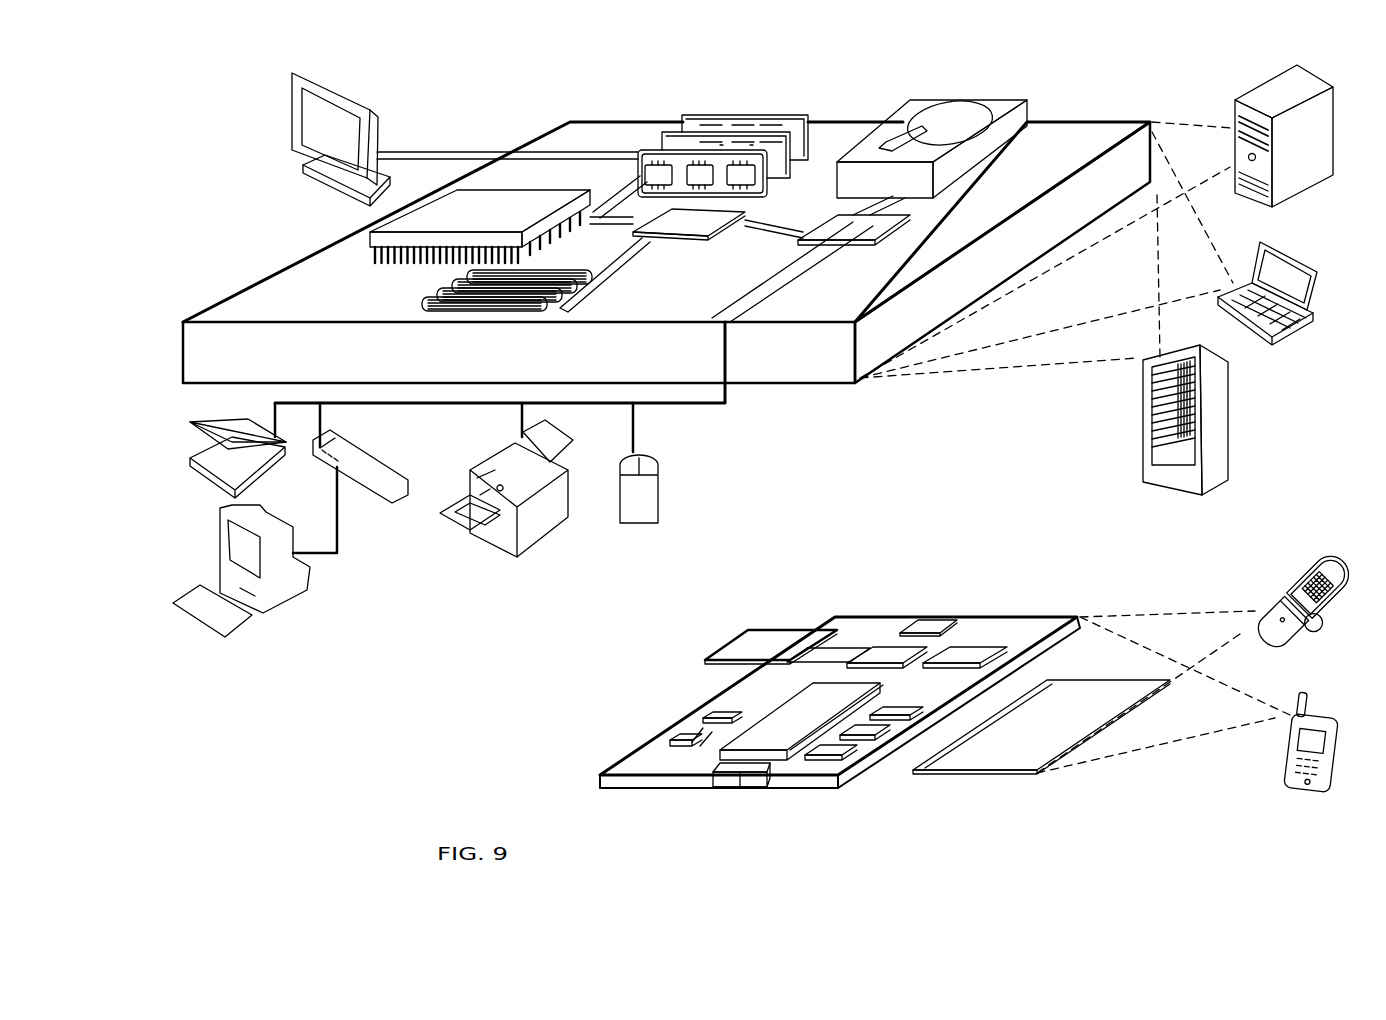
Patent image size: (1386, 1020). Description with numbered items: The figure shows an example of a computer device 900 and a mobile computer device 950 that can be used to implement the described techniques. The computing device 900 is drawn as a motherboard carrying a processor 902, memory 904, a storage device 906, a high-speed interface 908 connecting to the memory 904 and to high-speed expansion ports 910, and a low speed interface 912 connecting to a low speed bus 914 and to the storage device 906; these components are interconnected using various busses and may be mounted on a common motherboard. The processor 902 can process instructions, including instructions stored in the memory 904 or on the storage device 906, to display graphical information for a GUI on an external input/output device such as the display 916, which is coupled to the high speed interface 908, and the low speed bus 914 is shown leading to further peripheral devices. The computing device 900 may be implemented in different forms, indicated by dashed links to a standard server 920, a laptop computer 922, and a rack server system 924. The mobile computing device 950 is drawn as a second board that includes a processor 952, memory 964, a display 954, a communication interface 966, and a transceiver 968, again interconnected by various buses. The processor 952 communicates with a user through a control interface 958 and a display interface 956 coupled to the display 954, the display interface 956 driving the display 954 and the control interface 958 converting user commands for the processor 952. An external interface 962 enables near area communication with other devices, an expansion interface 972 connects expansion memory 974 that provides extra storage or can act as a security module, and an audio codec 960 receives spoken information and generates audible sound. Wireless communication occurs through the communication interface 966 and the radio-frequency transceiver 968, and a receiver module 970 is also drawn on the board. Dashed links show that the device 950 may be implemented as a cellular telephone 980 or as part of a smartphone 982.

The computing device 900 is at (490, 92).
The processor 902 is at (372, 242).
The memory 904 is at (700, 114).
The storage device 906 is at (918, 102).
The high-speed interface 908 is at (653, 212).
The high-speed expansion ports 910 is at (437, 290).
The low speed interface 912 is at (853, 223).
The low speed bus 914 is at (727, 323).
The display 916 is at (292, 76).
The standard server 920 is at (1235, 108).
The laptop computer 922 is at (1260, 245).
The rack server system 924 is at (1142, 445).
The mobile computing device 950 is at (816, 588).
The processor 952 is at (767, 787).
The display 954 is at (1040, 777).
The display interface 956 is at (850, 762).
The control interface 958 is at (887, 740).
The audio codec 960 is at (907, 720).
The external interface 962 is at (737, 788).
The memory 964 is at (685, 735).
The communication interface 966 is at (883, 647).
The transceiver 968 is at (965, 650).
The antenna 970 is at (928, 620).
The expansion interface 972 is at (808, 628).
The expansion memory 974 is at (748, 628).
The cellular telephone 980 is at (1308, 555).
The smartphone 982 is at (1291, 697).